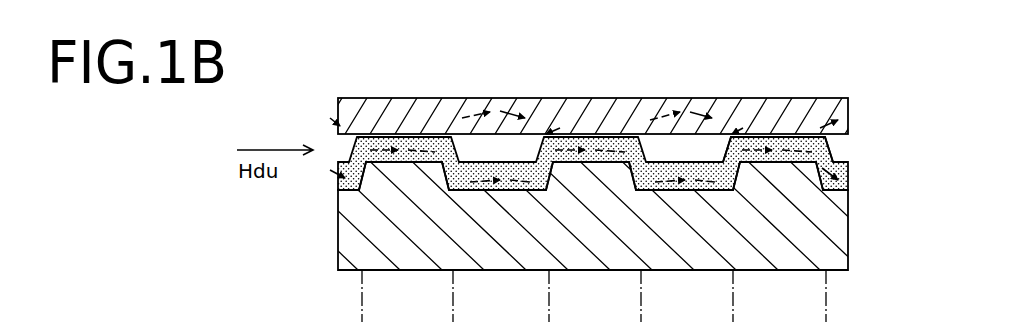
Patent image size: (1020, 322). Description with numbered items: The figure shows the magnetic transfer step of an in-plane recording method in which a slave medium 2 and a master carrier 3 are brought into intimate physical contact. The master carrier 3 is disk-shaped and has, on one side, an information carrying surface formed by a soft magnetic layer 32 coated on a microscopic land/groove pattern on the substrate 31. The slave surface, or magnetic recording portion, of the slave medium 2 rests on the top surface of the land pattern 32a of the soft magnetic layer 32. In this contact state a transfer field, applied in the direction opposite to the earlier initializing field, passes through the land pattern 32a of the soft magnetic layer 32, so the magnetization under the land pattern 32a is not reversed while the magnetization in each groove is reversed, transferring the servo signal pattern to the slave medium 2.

The slave medium 2 is at (805, 100).
The master carrier 3 is at (852, 227).
The substrate 31 is at (582, 255).
The soft magnetic layer 32 is at (607, 130).
The land pattern 32a is at (823, 140).